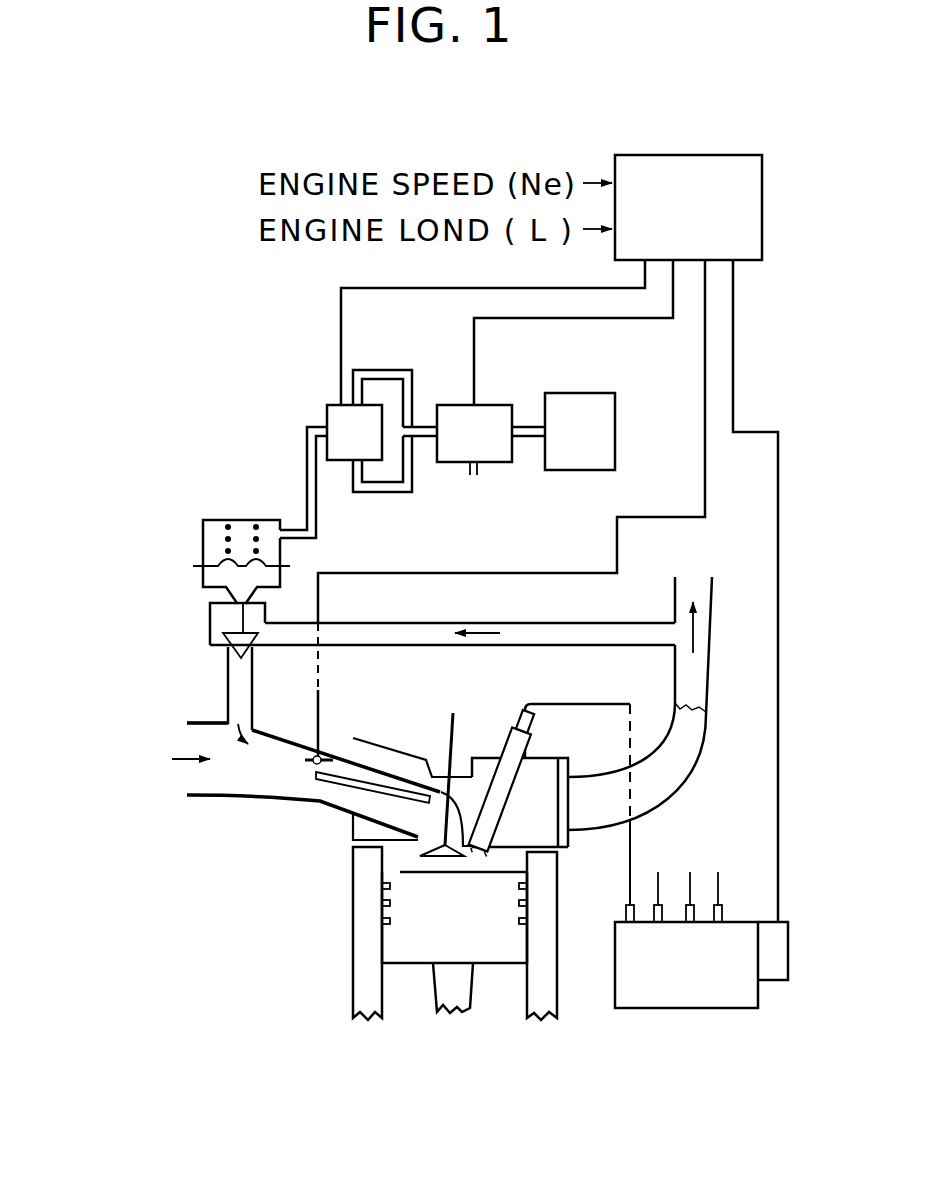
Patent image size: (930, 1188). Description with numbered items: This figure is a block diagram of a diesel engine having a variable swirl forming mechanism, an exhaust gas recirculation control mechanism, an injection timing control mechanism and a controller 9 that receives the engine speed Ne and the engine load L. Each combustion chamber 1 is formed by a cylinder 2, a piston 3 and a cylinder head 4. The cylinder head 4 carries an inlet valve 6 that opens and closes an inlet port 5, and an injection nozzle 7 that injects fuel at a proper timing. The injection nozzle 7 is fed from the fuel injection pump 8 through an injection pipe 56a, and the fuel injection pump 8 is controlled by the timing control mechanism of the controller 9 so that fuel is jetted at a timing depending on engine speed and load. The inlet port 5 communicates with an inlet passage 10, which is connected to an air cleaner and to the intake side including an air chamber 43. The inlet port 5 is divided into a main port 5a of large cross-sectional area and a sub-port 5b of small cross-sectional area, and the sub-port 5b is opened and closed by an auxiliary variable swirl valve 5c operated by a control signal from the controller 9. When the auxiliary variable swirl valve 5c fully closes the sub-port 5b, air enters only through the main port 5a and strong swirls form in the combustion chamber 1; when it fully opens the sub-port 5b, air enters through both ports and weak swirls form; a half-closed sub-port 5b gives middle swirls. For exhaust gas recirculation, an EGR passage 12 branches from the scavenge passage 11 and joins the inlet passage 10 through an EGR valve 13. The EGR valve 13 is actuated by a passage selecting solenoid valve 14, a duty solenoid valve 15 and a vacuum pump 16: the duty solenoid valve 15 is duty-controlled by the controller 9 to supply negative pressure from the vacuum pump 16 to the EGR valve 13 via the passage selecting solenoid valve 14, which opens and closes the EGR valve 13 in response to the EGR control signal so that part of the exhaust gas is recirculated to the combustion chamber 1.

The combustion chamber 1 is at (408, 857).
The cylinder 2 is at (367, 942).
The piston 3 is at (492, 950).
The cylinder head 4 is at (478, 768).
The inlet port 5 is at (415, 815).
The main port 5a is at (340, 791).
The sub-port 5b is at (347, 768).
The auxiliary variable swirl valve 5c is at (307, 755).
The inlet valve 6 is at (447, 742).
The injection nozzle 7 is at (497, 790).
The fuel injection pump 8 is at (736, 932).
The controller 9 is at (740, 250).
The inlet passage 10 is at (232, 788).
The scavenge passage 11 is at (693, 676).
The EGR passage 12 is at (565, 633).
The EGR valve 13 is at (249, 507).
The passage selecting solenoid valve 14 is at (333, 418).
The duty solenoid valve 15 is at (500, 450).
The vacuum pump 16 is at (585, 402).
The air chamber 43 is at (270, 778).
The injection pipe 56a is at (632, 840).